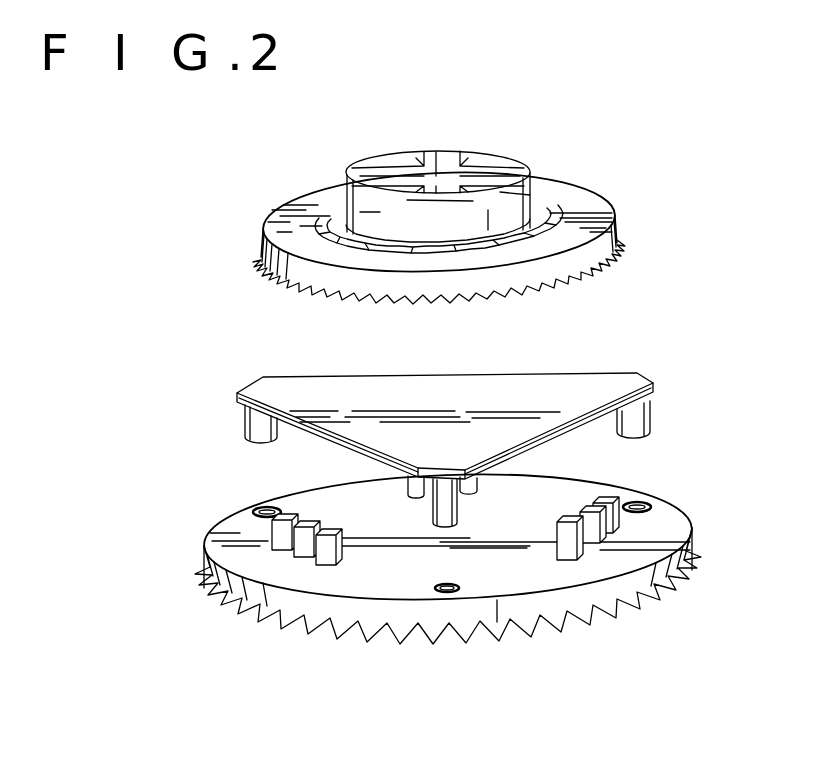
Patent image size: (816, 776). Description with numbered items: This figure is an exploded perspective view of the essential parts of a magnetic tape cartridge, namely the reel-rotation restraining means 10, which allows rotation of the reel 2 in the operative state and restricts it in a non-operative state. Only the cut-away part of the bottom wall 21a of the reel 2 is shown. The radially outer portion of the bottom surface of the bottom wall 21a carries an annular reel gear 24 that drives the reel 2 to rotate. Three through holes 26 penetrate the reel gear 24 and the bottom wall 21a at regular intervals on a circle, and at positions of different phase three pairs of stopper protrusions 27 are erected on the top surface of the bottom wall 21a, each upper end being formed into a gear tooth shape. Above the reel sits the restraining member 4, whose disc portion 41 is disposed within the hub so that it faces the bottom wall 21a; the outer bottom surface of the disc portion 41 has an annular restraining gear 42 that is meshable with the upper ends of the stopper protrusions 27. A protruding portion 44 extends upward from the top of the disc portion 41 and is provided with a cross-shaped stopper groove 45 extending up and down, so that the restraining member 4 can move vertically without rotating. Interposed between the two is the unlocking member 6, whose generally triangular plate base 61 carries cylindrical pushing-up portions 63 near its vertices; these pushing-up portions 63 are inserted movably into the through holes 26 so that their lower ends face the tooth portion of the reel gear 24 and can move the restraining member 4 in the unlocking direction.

The reel-rotation restraining means 10 is at (210, 168).
The restraining member 4 is at (598, 180).
The disc portion 41 is at (265, 224).
The restraining gear 42 is at (375, 302).
The protruding portion 44 is at (342, 197).
The stopper groove 45 is at (450, 162).
The unlocking member 6 is at (626, 351).
The plate base 61 is at (453, 390).
The pushing-up portions 63 is at (257, 432).
The reel 2 is at (697, 522).
The bottom wall 21a is at (540, 578).
The reel gear 24 is at (312, 637).
The through holes 26 is at (266, 507).
The stopper protrusions 27 is at (476, 488).